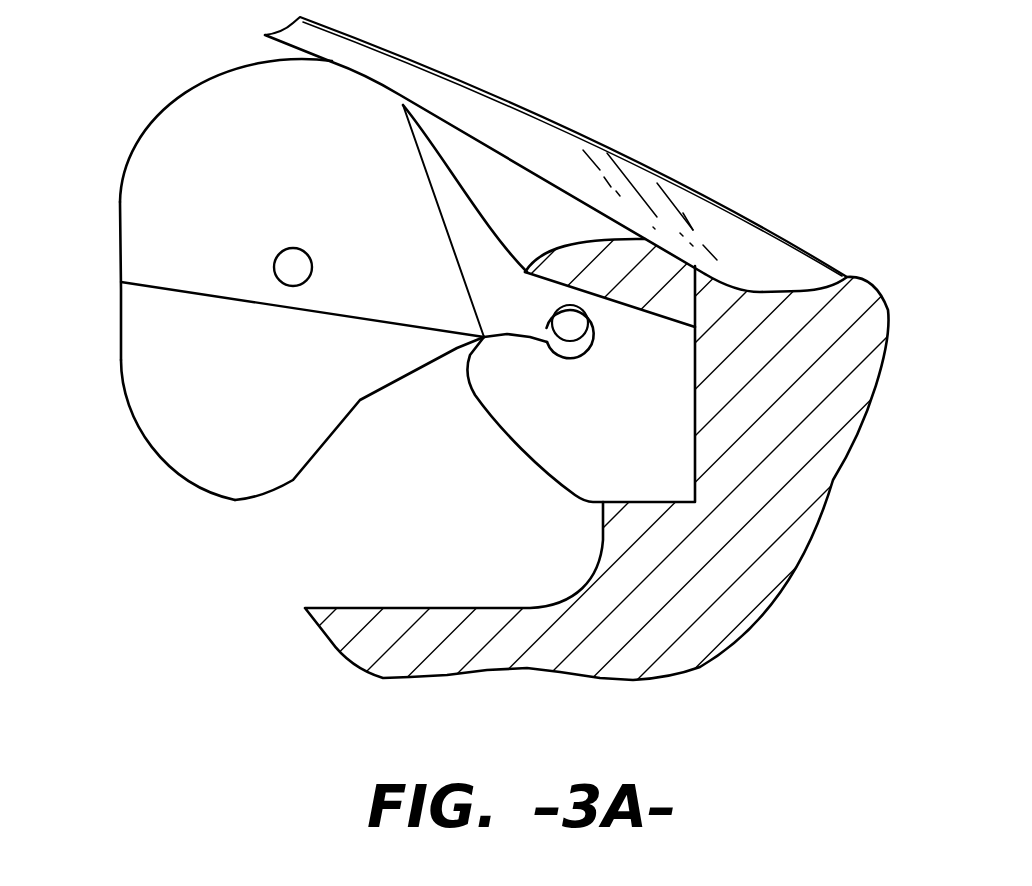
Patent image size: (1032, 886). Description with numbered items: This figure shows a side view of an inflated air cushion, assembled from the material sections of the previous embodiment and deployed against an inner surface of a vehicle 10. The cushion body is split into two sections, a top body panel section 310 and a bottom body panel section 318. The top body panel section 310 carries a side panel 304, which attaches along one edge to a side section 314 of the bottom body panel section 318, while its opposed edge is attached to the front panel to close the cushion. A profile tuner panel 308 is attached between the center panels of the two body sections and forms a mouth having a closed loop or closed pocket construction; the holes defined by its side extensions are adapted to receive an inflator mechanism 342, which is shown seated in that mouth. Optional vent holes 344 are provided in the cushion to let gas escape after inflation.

The vehicle 10 is at (320, 552).
The side panel 304 is at (212, 461).
The profile tuner panel 308 is at (442, 187).
The top body panel section 310 is at (122, 358).
The side section 314 is at (238, 80).
The bottom body panel section 318 is at (157, 118).
The inflator mechanism 342 is at (575, 325).
The vent holes 344 is at (283, 248).